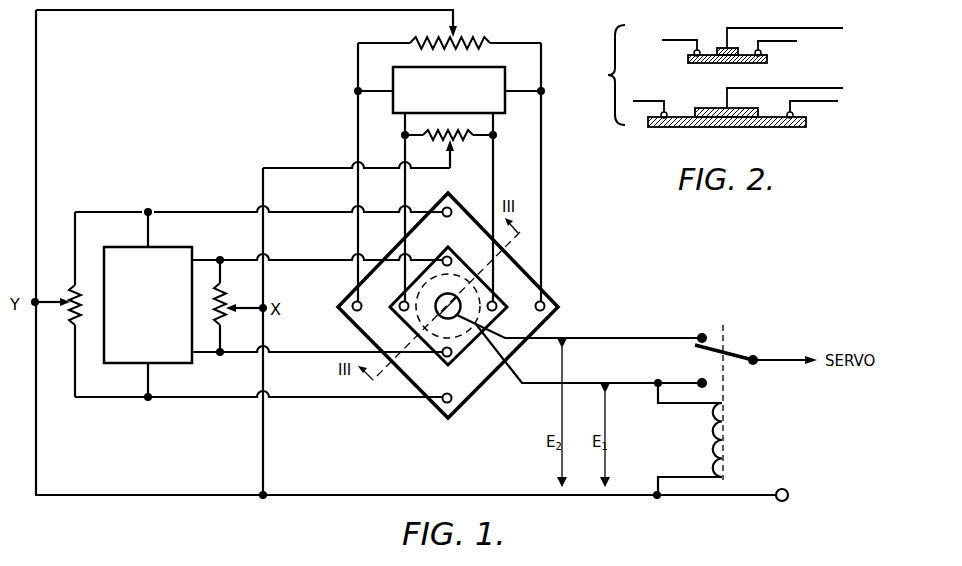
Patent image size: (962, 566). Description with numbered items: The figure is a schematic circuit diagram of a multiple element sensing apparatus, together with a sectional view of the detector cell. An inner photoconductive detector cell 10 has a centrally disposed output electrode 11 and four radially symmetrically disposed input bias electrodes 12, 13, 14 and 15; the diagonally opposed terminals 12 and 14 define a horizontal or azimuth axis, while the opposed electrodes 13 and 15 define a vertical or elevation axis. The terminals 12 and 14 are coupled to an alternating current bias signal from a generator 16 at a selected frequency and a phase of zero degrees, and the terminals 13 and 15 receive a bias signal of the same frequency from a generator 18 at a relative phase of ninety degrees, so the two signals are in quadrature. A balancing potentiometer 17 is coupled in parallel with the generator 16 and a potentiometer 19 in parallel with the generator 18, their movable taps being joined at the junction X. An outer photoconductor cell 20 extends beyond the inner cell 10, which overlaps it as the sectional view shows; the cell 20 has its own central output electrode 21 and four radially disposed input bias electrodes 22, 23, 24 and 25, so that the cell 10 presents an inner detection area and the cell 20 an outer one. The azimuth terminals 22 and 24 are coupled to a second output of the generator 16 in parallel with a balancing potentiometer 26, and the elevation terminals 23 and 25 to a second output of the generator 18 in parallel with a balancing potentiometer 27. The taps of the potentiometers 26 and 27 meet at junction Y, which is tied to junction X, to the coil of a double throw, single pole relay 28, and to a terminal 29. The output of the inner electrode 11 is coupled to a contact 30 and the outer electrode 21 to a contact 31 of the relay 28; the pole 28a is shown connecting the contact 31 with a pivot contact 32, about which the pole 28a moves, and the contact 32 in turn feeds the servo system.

In FIG. 1, the inner photoconductive detector cell 10 is at (430, 347).
In FIG. 2, the inner photoconductive detector cell 10 is at (772, 63).
In FIG. 1, the output electrode 11 is at (443, 298).
In FIG. 2, the output electrode 11 is at (736, 49).
In FIG. 1, the input bias electrode 12 is at (496, 301).
In FIG. 1, the input bias electrode 13 is at (450, 356).
In FIG. 1, the input bias electrode 14 is at (400, 310).
In FIG. 2, the input bias electrode 14 is at (700, 50).
In FIG. 1, the input bias electrode 15 is at (445, 256).
In FIG. 2, the input bias electrode 15 is at (763, 57).
In FIG. 1, the generator 16 is at (505, 72).
In FIG. 1, the balancing potentiometer 17 is at (462, 139).
In FIG. 1, the generator 18 is at (192, 252).
In FIG. 1, the potentiometer 19 is at (223, 294).
In FIG. 1, the outer photoconductor cell 20 is at (368, 340).
In FIG. 2, the outer photoconductor cell 20 is at (775, 127).
In FIG. 1, the output electrode 21 is at (452, 270).
In FIG. 2, the output electrode 21 is at (721, 108).
In FIG. 1, the input bias electrode 22 is at (547, 302).
In FIG. 1, the input bias electrode 23 is at (450, 403).
In FIG. 1, the input bias electrode 24 is at (352, 303).
In FIG. 2, the input bias electrode 24 is at (667, 112).
In FIG. 1, the input bias electrode 25 is at (450, 207).
In FIG. 2, the input bias electrode 25 is at (797, 116).
In FIG. 1, the balancing potentiometer 26 is at (473, 39).
In FIG. 1, the balancing potentiometer 27 is at (73, 293).
In FIG. 1, the relay 28 is at (731, 433).
In FIG. 1, the pole 28a is at (738, 349).
In FIG. 1, the terminal 29 is at (788, 490).
In FIG. 1, the contact 30 is at (699, 380).
In FIG. 1, the contact 31 is at (700, 334).
In FIG. 1, the pivot contact 32 is at (757, 365).